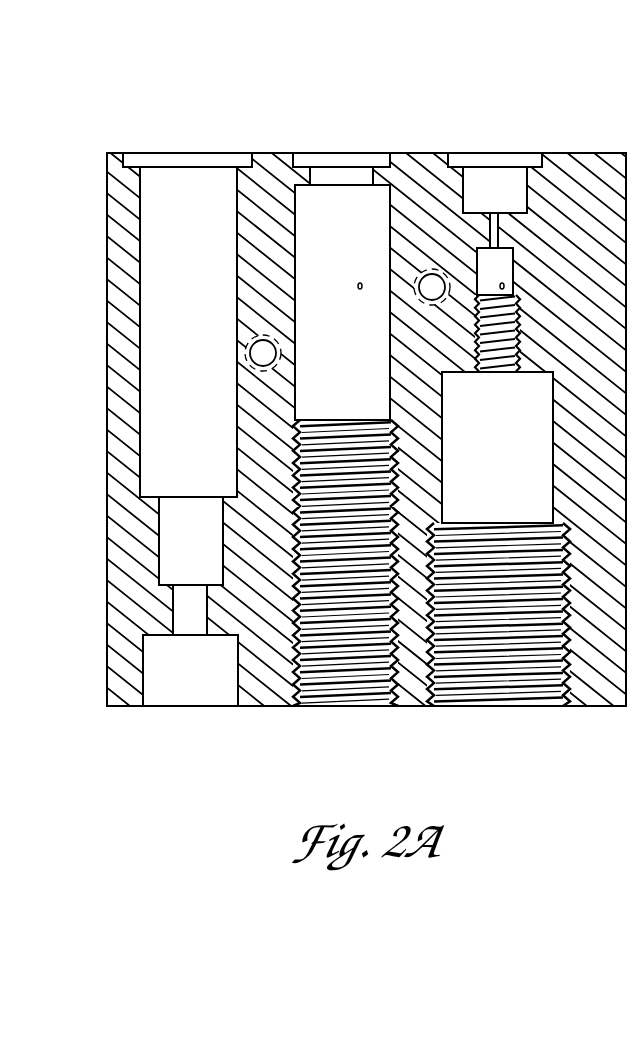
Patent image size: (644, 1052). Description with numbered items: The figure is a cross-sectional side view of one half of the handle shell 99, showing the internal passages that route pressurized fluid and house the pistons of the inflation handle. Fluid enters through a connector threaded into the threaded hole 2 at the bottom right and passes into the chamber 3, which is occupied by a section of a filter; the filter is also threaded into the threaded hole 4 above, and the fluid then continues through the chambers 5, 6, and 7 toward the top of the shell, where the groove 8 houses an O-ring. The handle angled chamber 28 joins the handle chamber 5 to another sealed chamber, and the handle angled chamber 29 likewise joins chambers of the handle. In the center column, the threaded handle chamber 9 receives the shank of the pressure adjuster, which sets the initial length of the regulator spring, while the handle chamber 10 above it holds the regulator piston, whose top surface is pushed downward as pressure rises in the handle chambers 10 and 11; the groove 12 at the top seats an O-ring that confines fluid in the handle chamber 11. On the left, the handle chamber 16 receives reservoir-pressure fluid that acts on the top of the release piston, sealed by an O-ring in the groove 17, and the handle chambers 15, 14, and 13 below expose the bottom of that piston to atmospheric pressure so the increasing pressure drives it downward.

The handle shell 99 is at (108, 122).
The groove 17 is at (217, 156).
The handle chamber 16 is at (198, 336).
The handle chamber 15 is at (201, 549).
The handle chamber 14 is at (204, 626).
The handle chamber 13 is at (201, 688).
The groove 12 is at (347, 160).
The handle chamber 11 is at (327, 168).
The handle chamber 10 is at (356, 332).
The handle angled chamber 29 is at (357, 286).
The threaded handle chamber 9 is at (348, 707).
The groove 8 is at (522, 162).
The chamber 7 is at (502, 202).
The chamber 6 is at (491, 232).
The handle chamber 5 is at (502, 277).
The handle angled chamber 28 is at (505, 286).
The threaded hole 4 is at (493, 373).
The chamber 3 is at (501, 467).
The threaded hole 2 is at (513, 704).